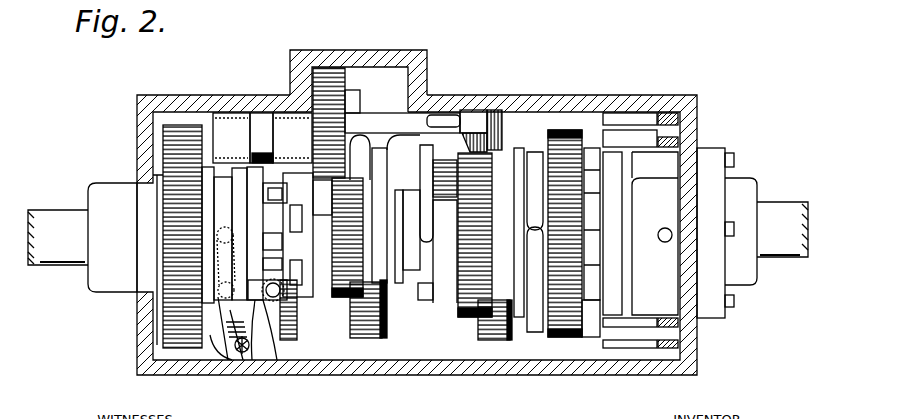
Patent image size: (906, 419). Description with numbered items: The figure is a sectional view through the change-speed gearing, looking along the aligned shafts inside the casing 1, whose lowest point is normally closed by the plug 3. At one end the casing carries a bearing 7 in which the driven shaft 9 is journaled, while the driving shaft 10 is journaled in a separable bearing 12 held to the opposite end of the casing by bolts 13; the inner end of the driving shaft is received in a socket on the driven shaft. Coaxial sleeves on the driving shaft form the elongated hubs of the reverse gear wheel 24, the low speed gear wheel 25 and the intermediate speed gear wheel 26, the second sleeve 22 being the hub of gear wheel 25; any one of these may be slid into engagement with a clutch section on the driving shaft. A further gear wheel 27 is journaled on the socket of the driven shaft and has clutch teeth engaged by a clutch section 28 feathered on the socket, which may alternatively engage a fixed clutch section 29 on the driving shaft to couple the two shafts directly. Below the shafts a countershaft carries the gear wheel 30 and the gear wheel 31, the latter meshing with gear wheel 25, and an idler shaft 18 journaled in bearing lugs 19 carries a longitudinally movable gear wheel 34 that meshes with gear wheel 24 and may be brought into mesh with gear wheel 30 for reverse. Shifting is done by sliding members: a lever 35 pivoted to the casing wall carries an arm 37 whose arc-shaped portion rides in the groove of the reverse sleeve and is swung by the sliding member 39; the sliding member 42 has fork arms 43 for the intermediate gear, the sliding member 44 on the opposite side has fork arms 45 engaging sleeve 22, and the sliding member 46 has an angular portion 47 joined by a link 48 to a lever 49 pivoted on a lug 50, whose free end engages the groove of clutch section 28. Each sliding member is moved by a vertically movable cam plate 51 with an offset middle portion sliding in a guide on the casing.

The casing 1 is at (687, 93).
The plug 3 is at (417, 1).
The bearing 7 is at (105, 190).
The driven shaft 9 is at (43, 218).
The driving shaft 10 is at (779, 216).
The separable bearing 12 is at (757, 180).
The bolts 13 is at (733, 158).
The idler shaft 18 is at (258, 128).
The bearing lugs 19 is at (262, 138).
The second sleeve 22 is at (443, 283).
The reverse gear wheel 24 is at (340, 298).
The low speed gear wheel 25 is at (497, 150).
The intermediate speed gear wheel 26 is at (590, 110).
The gear wheel 27 is at (188, 333).
The clutch section 28 is at (227, 188).
The fixed clutch section 29 is at (308, 293).
The gear wheel 30 is at (395, 268).
The gear wheel 31 is at (497, 333).
The gear wheel 34 is at (325, 80).
The lever 35 is at (445, 116).
The arm 37 is at (402, 186).
The sliding member 39 is at (497, 110).
The sliding member 42 is at (592, 330).
The fork arms 43 is at (534, 310).
The sliding member 44 is at (567, 128).
The fork arms 45 is at (437, 183).
The sliding member 46 is at (370, 350).
The angular portion 47 is at (290, 335).
The link 48 is at (254, 305).
The lever 49 is at (233, 320).
The lug 50 is at (233, 355).
The cam plate 51 is at (627, 118).